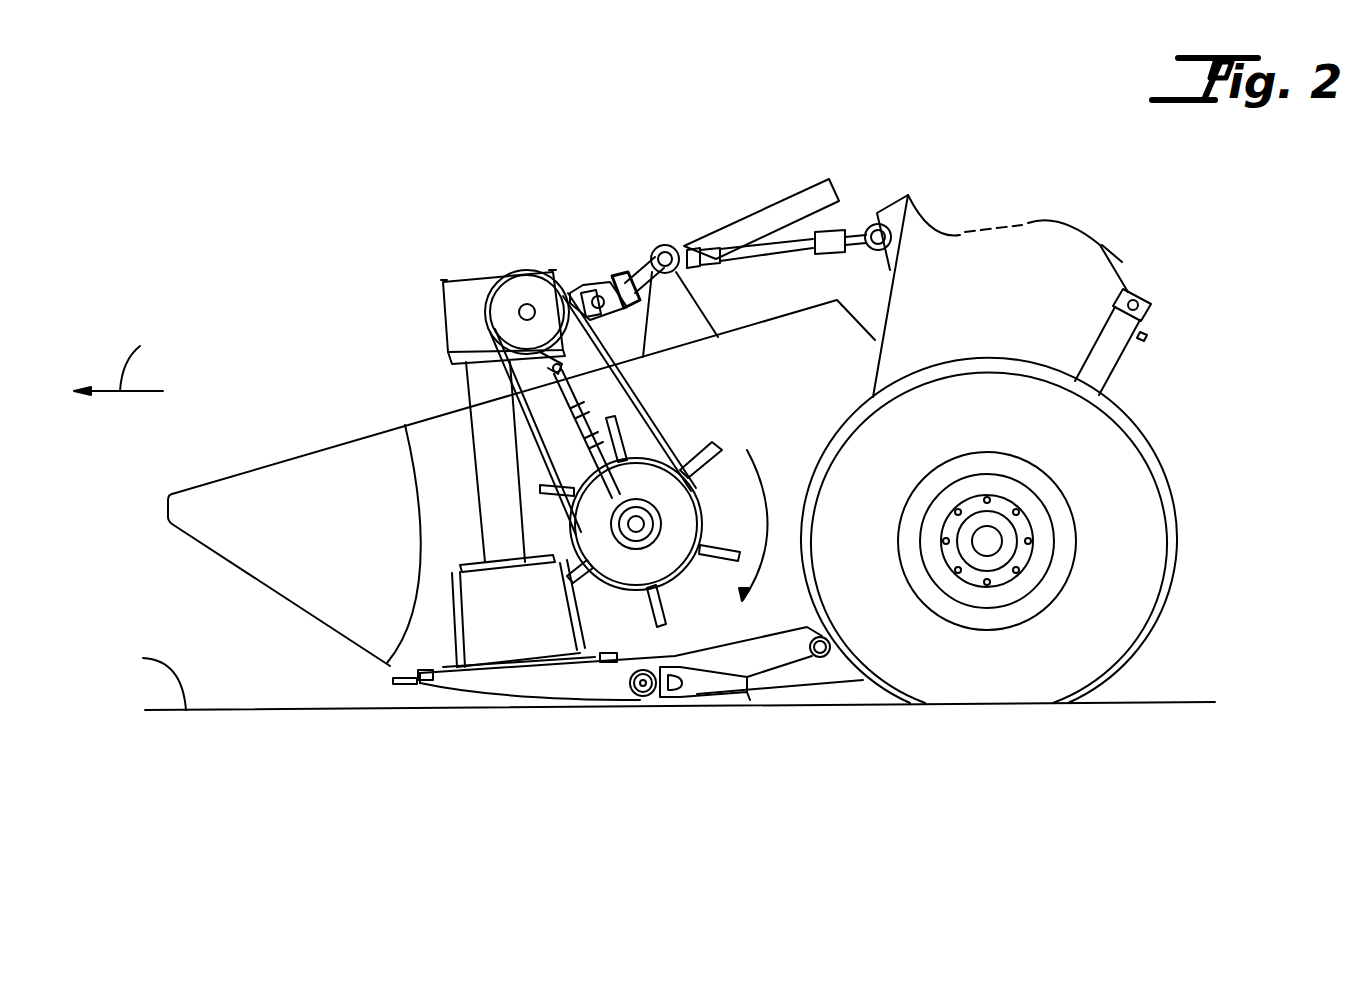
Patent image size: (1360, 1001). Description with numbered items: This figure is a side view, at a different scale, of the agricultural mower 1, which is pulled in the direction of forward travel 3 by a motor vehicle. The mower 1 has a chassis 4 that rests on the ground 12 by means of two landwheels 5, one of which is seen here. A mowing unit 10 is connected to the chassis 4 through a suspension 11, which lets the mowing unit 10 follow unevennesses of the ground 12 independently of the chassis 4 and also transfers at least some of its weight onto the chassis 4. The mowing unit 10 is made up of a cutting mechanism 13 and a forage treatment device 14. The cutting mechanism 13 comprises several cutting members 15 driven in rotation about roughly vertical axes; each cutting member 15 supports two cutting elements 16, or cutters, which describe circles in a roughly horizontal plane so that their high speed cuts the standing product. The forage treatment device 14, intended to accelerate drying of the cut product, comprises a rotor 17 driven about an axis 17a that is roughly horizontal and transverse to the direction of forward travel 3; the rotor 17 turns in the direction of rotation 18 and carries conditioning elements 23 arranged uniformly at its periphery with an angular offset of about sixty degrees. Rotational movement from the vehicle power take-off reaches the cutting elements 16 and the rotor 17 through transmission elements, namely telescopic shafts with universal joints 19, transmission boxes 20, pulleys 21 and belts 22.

The agricultural mower 1 is at (268, 203).
The direction of forward travel 3 is at (118, 363).
The chassis 4 is at (920, 203).
The landwheel 5 is at (1165, 463).
The mowing unit 10 is at (302, 454).
The suspension 11 is at (810, 695).
The ground 12 is at (146, 679).
The cutting mechanism 13 is at (445, 585).
The forage treatment device 14 is at (710, 414).
The cutting member 15 is at (515, 626).
The cutting element 16 is at (398, 680).
The rotor 17 is at (579, 521).
The axis of the rotor 17a is at (539, 521).
The direction of rotation 18 is at (765, 543).
The telescopic shaft with universal joints 19 is at (797, 193).
The transmission box 20 is at (463, 278).
The pulley 21 is at (487, 318).
The belt 22 is at (645, 412).
The conditioning element 23 is at (727, 441).